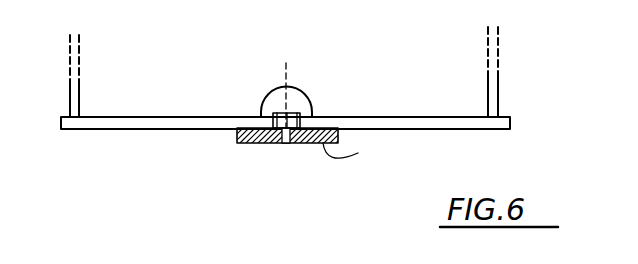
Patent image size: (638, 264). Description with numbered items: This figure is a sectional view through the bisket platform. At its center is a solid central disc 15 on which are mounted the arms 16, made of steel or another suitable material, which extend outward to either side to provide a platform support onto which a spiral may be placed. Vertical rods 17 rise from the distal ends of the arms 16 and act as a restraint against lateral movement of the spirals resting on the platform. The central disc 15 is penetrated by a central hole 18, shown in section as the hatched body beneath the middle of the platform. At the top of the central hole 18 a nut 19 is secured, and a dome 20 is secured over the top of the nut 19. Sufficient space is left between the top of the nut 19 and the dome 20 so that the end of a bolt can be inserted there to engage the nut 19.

The central disc 15 is at (359, 157).
The arms 16 is at (152, 125).
The vertical rods 17 is at (79, 62).
The central hole 18 is at (287, 144).
The nut 19 is at (283, 106).
The dome 20 is at (302, 98).